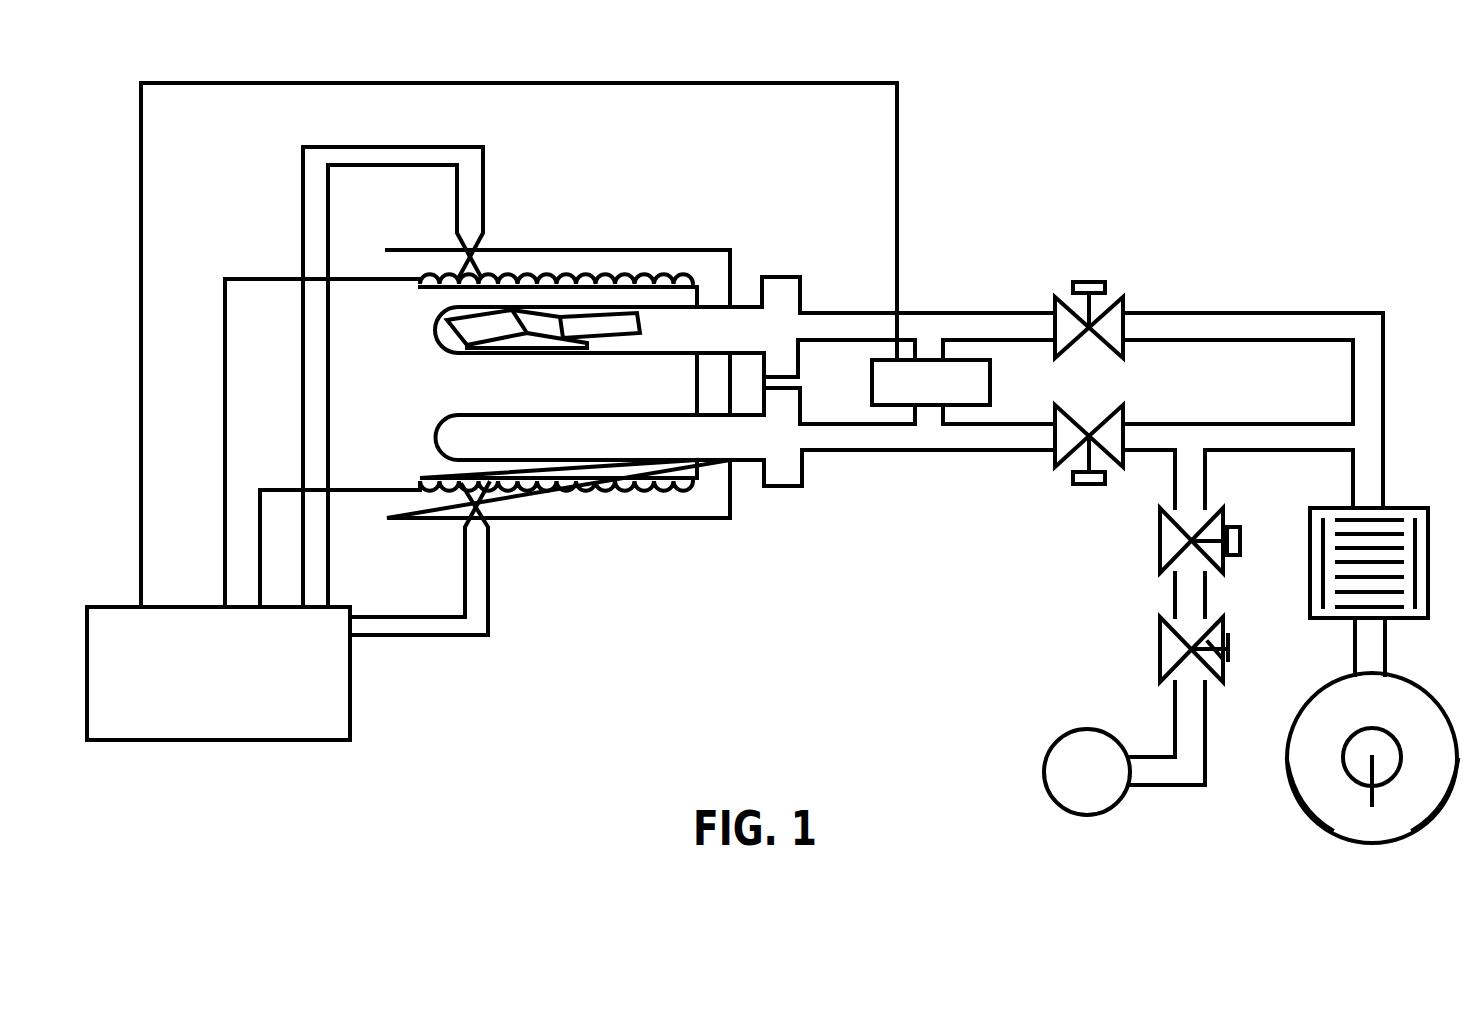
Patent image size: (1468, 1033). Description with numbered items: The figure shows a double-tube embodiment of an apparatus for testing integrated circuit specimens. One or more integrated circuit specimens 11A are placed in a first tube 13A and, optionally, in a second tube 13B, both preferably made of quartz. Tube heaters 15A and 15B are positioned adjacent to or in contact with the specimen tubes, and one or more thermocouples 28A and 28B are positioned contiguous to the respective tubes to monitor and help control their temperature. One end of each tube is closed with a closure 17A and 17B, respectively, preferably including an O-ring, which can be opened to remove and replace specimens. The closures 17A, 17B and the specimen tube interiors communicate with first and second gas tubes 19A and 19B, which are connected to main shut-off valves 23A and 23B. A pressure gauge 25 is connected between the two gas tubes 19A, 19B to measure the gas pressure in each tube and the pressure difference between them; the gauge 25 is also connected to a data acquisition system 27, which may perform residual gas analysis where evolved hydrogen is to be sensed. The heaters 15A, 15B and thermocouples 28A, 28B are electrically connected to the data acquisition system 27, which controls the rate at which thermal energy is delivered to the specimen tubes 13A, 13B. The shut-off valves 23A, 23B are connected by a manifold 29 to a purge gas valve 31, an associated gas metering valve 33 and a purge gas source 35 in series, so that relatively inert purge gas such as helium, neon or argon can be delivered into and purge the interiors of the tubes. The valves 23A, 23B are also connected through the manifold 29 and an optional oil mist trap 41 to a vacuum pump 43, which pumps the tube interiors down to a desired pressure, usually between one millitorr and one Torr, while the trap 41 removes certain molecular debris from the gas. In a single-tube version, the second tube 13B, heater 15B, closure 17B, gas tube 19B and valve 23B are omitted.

The integrated circuit specimen 11A is at (483, 328).
The first tube 13A is at (545, 308).
The second tube 13B is at (598, 460).
The tube heater 15A is at (649, 272).
The tube heater 15B is at (540, 493).
The closure 17A is at (781, 293).
The closure 17B is at (790, 463).
The first gas tube 19A is at (929, 347).
The second gas tube 19B is at (845, 442).
The main shut-off valve 23A is at (1092, 280).
The main shut-off valve 23B is at (1092, 487).
The pressure gauge 25 is at (992, 325).
The data acquisition system 27 is at (262, 742).
The thermocouple 28A is at (485, 190).
The thermocouple 28B is at (461, 556).
The manifold 29 is at (1192, 483).
The purge gas valve 31 is at (1168, 576).
The gas metering valve 33 is at (1167, 680).
The purge gas source 35 is at (1062, 748).
The oil mist trap 41 is at (1405, 507).
The vacuum pump 43 is at (1417, 680).